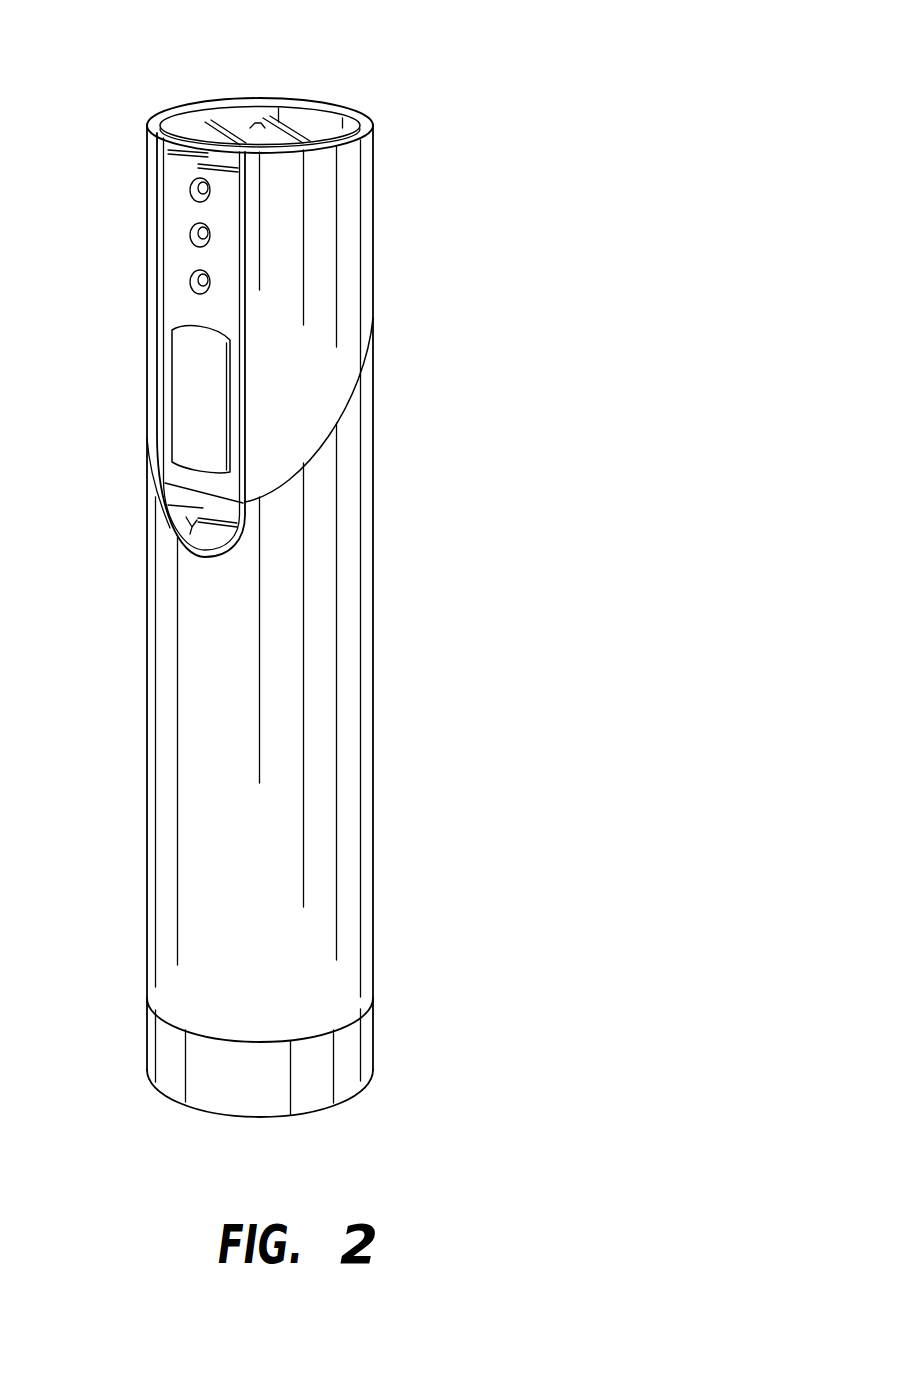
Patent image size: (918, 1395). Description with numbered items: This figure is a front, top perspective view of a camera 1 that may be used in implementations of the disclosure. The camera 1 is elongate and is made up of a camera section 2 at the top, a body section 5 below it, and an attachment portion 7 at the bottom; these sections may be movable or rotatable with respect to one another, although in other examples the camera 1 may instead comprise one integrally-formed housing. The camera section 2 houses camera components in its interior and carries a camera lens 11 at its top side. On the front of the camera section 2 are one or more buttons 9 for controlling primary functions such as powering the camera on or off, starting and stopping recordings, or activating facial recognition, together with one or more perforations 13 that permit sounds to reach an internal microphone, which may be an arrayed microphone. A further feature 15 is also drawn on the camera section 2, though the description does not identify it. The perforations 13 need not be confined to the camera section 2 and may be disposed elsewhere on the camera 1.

The camera 1 is at (470, 84).
The camera section 2 is at (374, 268).
The body section 5 is at (146, 700).
The attachment portion 7 is at (146, 1052).
The buttons 9 is at (170, 360).
The camera lens 11 is at (250, 128).
The perforations 13 is at (190, 188).
The indicator 15 is at (182, 520).